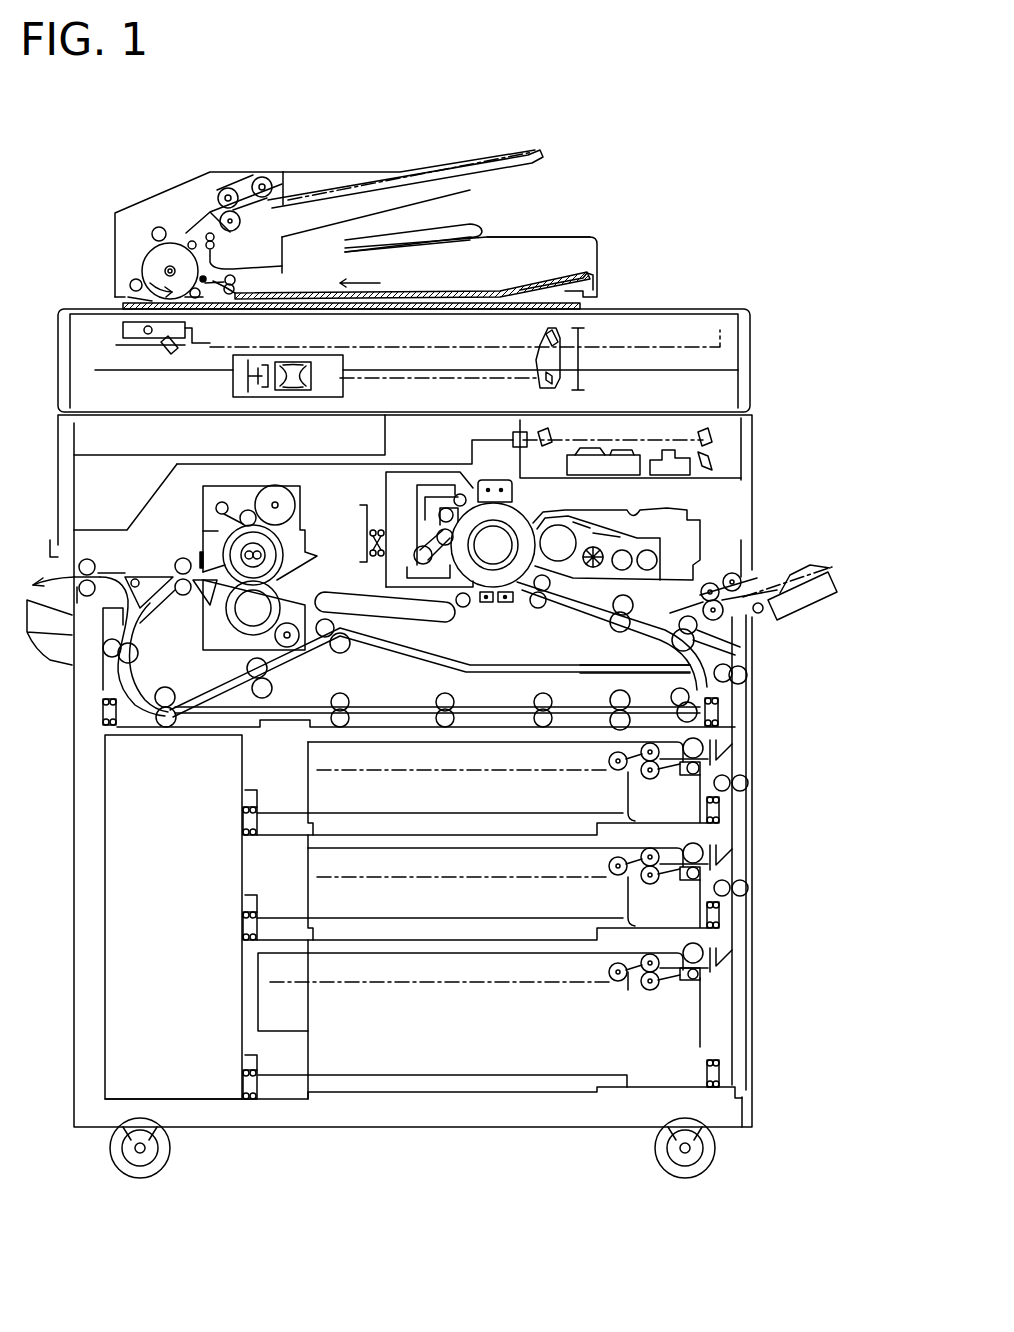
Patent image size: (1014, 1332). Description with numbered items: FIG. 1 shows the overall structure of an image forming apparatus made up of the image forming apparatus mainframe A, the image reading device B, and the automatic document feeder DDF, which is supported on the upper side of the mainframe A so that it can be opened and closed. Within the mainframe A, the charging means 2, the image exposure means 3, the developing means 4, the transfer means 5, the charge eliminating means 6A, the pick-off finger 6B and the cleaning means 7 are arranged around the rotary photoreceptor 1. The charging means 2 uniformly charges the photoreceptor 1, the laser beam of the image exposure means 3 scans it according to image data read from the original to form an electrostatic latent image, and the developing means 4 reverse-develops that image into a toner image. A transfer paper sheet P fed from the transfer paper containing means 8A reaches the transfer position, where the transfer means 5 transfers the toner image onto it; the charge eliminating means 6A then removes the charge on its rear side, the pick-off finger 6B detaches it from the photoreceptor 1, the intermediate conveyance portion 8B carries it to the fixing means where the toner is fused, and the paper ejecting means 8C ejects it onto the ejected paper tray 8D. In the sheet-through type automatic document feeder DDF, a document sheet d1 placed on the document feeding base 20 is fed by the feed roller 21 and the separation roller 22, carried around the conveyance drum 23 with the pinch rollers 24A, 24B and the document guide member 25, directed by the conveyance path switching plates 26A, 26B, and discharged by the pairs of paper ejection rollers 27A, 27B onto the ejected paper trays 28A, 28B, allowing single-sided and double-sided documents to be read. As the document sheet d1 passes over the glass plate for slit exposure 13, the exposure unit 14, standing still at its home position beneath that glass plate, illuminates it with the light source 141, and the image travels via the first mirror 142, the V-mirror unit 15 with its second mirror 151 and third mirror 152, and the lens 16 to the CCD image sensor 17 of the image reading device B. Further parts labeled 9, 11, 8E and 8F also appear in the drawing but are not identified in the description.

The automatic document feeder DDF is at (748, 179).
The conveyance drum 23 is at (146, 252).
The pinch roller 24A is at (155, 228).
The conveyance path switching plate 26A is at (189, 241).
The pinch roller 24B is at (131, 281).
The document guide member 25 is at (128, 296).
The glass plate for slit exposure 13 is at (138, 309).
The separation roller 22 is at (232, 187).
The feed roller 21 is at (268, 180).
The pair of paper ejection rollers 27A is at (215, 246).
The pair of paper ejection rollers 27B is at (237, 286).
The conveyance path switching plate 26B is at (205, 285).
The document feeding base 20 is at (543, 155).
The document sheet d1 is at (432, 166).
The ejected paper tray 28A is at (470, 226).
The ejected paper tray 28B is at (586, 237).
The conveyance belt 11 is at (598, 286).
The image reading device B is at (760, 356).
The exposure unit 14 is at (118, 329).
The light source 141 is at (146, 336).
The first mirror 142 is at (158, 356).
The CCD image sensor 17 is at (250, 386).
The lens 16 is at (338, 382).
The V-mirror unit 15 is at (585, 337).
The second mirror 151 is at (542, 334).
The third mirror 152 is at (540, 386).
The image forming apparatus mainframe A is at (760, 548).
The image exposure means 3 is at (725, 446).
The toner supply unit 9 is at (268, 484).
The cleaning means 7 is at (415, 515).
The charging means 2 is at (487, 480).
The photoreceptor 1 is at (516, 524).
The developing means 4 is at (585, 505).
The pick-off finger 6B is at (427, 578).
The charge eliminating means 6A is at (486, 604).
The transfer means 5 is at (507, 604).
The conveyance belt 8F is at (418, 645).
The intermediate conveyance portion 8B is at (372, 617).
The reversing conveyance path 8E is at (160, 580).
The paper ejecting means 8C is at (90, 560).
The ejected paper tray 8D is at (42, 640).
The transfer paper containing means 8A is at (308, 755).
The transfer paper sheet P is at (320, 770).